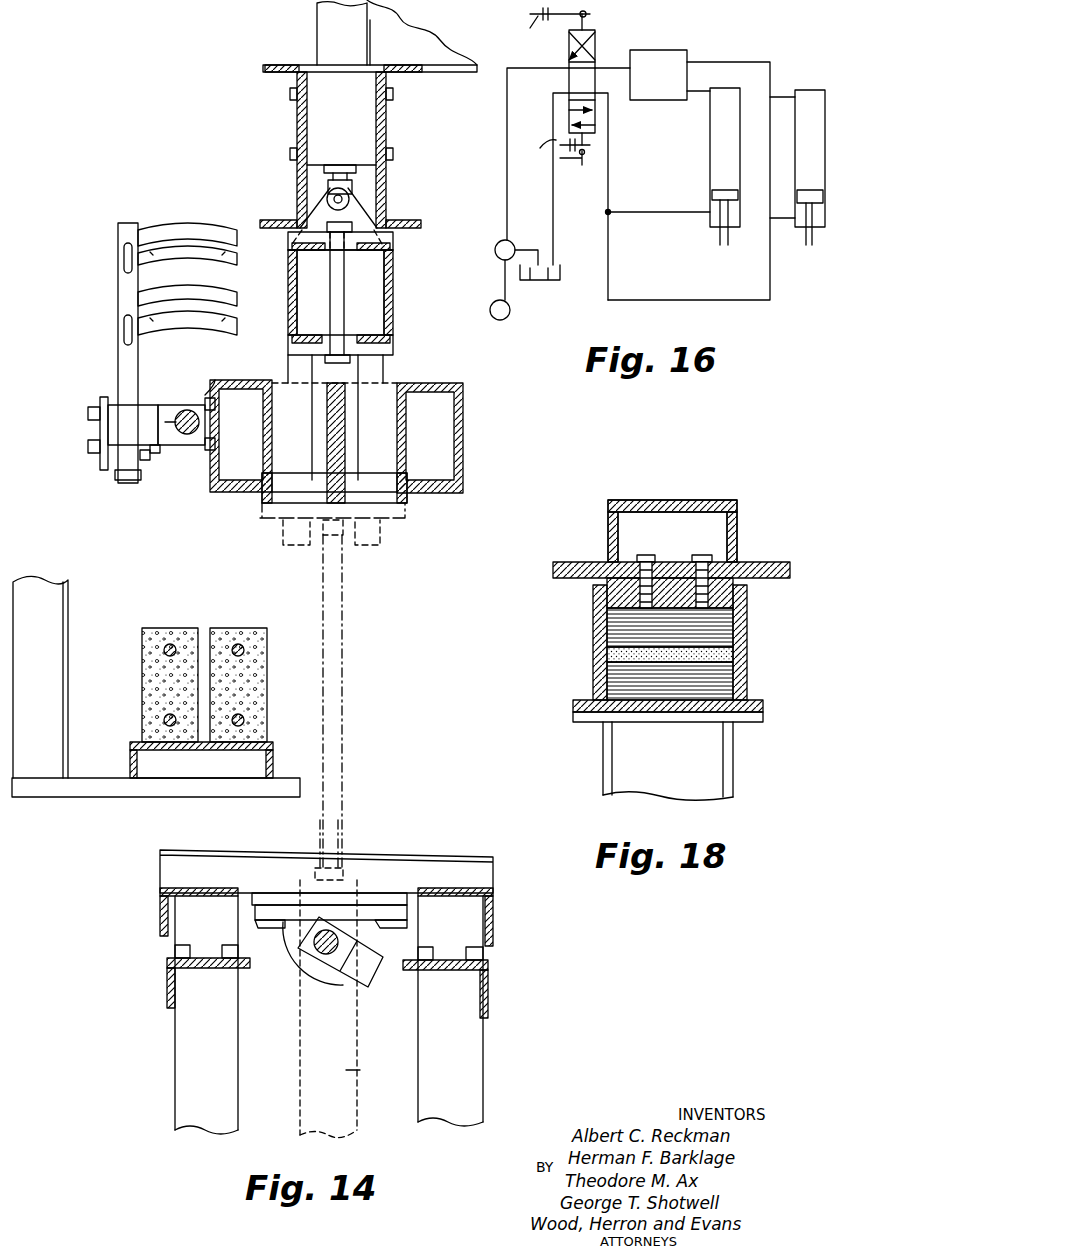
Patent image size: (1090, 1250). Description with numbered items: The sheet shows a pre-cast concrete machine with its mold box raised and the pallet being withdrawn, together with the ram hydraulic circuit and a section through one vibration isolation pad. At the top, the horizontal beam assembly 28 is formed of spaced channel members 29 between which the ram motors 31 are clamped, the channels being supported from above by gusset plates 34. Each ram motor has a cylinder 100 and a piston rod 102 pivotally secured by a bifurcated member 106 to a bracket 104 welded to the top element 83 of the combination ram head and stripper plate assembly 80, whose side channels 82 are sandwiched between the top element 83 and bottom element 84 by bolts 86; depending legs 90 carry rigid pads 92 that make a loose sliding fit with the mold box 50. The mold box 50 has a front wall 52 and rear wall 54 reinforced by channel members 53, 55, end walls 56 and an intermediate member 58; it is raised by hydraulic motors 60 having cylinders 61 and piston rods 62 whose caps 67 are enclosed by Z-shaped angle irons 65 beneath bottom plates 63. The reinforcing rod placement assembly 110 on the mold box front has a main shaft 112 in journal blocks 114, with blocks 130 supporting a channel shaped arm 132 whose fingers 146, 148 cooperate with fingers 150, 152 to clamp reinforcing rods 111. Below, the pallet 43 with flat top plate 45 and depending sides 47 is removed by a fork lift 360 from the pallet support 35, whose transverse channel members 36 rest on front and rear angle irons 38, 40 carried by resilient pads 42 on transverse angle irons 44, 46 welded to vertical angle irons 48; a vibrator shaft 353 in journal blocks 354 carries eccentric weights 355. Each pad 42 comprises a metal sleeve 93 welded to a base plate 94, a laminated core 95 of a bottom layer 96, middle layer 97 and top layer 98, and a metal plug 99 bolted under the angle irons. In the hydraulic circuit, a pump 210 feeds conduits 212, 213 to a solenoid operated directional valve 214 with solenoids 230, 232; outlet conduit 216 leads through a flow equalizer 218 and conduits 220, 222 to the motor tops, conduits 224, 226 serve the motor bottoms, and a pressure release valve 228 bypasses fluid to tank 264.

In FIG. 14, the horizontal beam assembly 28 is at (317, 150).
In FIG. 14, the channel members 29 is at (307, 108).
In FIG. 14, the ram motors 31 is at (358, 14).
In FIG. 16, the ram motors 31 is at (790, 168).
In FIG. 14, the gusset plates 34 is at (440, 46).
In FIG. 14, the pallet support 35 is at (332, 979).
In FIG. 14, the transverse channel members 36 is at (395, 862).
In FIG. 18, the transverse channel members 36 is at (740, 500).
In FIG. 14, the front angle iron 38 is at (160, 906).
In FIG. 14, the rear angle iron 40 is at (493, 922).
In FIG. 18, the rear angle iron 40 is at (788, 576).
In FIG. 14, the resilient pads 42 is at (208, 945).
In FIG. 18, the resilient pads 42 is at (686, 643).
In FIG. 14, the pallet 43 is at (272, 745).
In FIG. 14, the front transverse angle iron 44 is at (167, 990).
In FIG. 14, the flat top plate 45 is at (268, 740).
In FIG. 14, the rear transverse angle iron 46 is at (488, 995).
In FIG. 18, the rear transverse angle iron 46 is at (765, 718).
In FIG. 14, the depending sides 47 is at (130, 766).
In FIG. 14, the vertical angle irons 48 is at (329, 1101).
In FIG. 18, the vertical angle irons 48 is at (735, 772).
In FIG. 14, the mold box 50 is at (355, 439).
In FIG. 14, the front wall 52 is at (250, 412).
In FIG. 14, the front channel member 53 is at (219, 424).
In FIG. 14, the rear wall 54 is at (406, 420).
In FIG. 14, the rear channel member 55 is at (463, 436).
In FIG. 14, the end walls 56 is at (404, 462).
In FIG. 14, the intermediate member 58 is at (335, 445).
In FIG. 14, the hydraulic motors 60 is at (355, 1110).
In FIG. 14, the cylinders 61 is at (357, 1070).
In FIG. 14, the piston rods 62 is at (342, 637).
In FIG. 14, the bottom plate 63 is at (408, 519).
In FIG. 14, the Z-shaped angle irons 65 is at (383, 542).
In FIG. 14, the cap 67 is at (330, 540).
In FIG. 14, the combination ram head and stripper plate assembly 80 is at (364, 292).
In FIG. 14, the side channels 82 is at (297, 292).
In FIG. 14, the top element 83 is at (393, 246).
In FIG. 14, the bottom element 84 is at (393, 348).
In FIG. 14, the bolts 86 is at (344, 302).
In FIG. 14, the depending legs 90 is at (290, 458).
In FIG. 14, the rigid pads 92 is at (268, 486).
In FIG. 18, the metal sleeve 93 is at (747, 656).
In FIG. 18, the base plate 94 is at (755, 700).
In FIG. 18, the vibration isolation core 95 is at (675, 693).
In FIG. 18, the bottom layer 96 is at (612, 676).
In FIG. 18, the middle layer 97 is at (612, 652).
In FIG. 18, the top layer 98 is at (612, 624).
In FIG. 18, the metal plugs 99 is at (735, 578).
In FIG. 14, the cylinder 100 is at (317, 14).
In FIG. 16, the cylinder 100 is at (795, 120).
In FIG. 14, the piston rod 102 is at (350, 176).
In FIG. 16, the piston rod 102 is at (806, 240).
In FIG. 14, the bracket 104 is at (370, 222).
In FIG. 14, the bifurcated member 106 is at (327, 196).
In FIG. 14, the reinforcing rod placement assembly 110 is at (172, 333).
In FIG. 14, the reinforcing rods 111 is at (172, 645).
In FIG. 14, the main shaft 112 is at (180, 440).
In FIG. 14, the journal blocks 114 is at (210, 383).
In FIG. 14, the blocks 130 is at (118, 291).
In FIG. 14, the channel shaped arm 132 is at (118, 352).
In FIG. 14, the finger 146 is at (232, 292).
In FIG. 14, the finger 148 is at (200, 230).
In FIG. 14, the finger 150 is at (205, 324).
In FIG. 14, the finger 152 is at (205, 254).
In FIG. 16, the pump 210 is at (508, 316).
In FIG. 16, the conduit 212 is at (500, 188).
In FIG. 16, the conduit 213 is at (553, 220).
In FIG. 16, the solenoid operated directional valve 214 is at (600, 42).
In FIG. 16, the valve outlet conduit 216 is at (632, 78).
In FIG. 16, the flow equalizer 218 is at (678, 52).
In FIG. 16, the conduit 220 is at (752, 62).
In FIG. 16, the conduit 222 is at (700, 96).
In FIG. 16, the conduit 224 is at (608, 172).
In FIG. 16, the conduit 226 is at (663, 218).
In FIG. 16, the pressure release valve 228 is at (498, 258).
In FIG. 16, the solenoid 230 is at (588, 16).
In FIG. 16, the solenoid 232 is at (592, 158).
In FIG. 16, the tank 264 is at (555, 282).
In FIG. 14, the shaft 353 is at (328, 932).
In FIG. 14, the journal blocks 354 is at (290, 950).
In FIG. 14, the eccentric weights 355 is at (368, 982).
In FIG. 14, the fork lift 360 is at (135, 790).